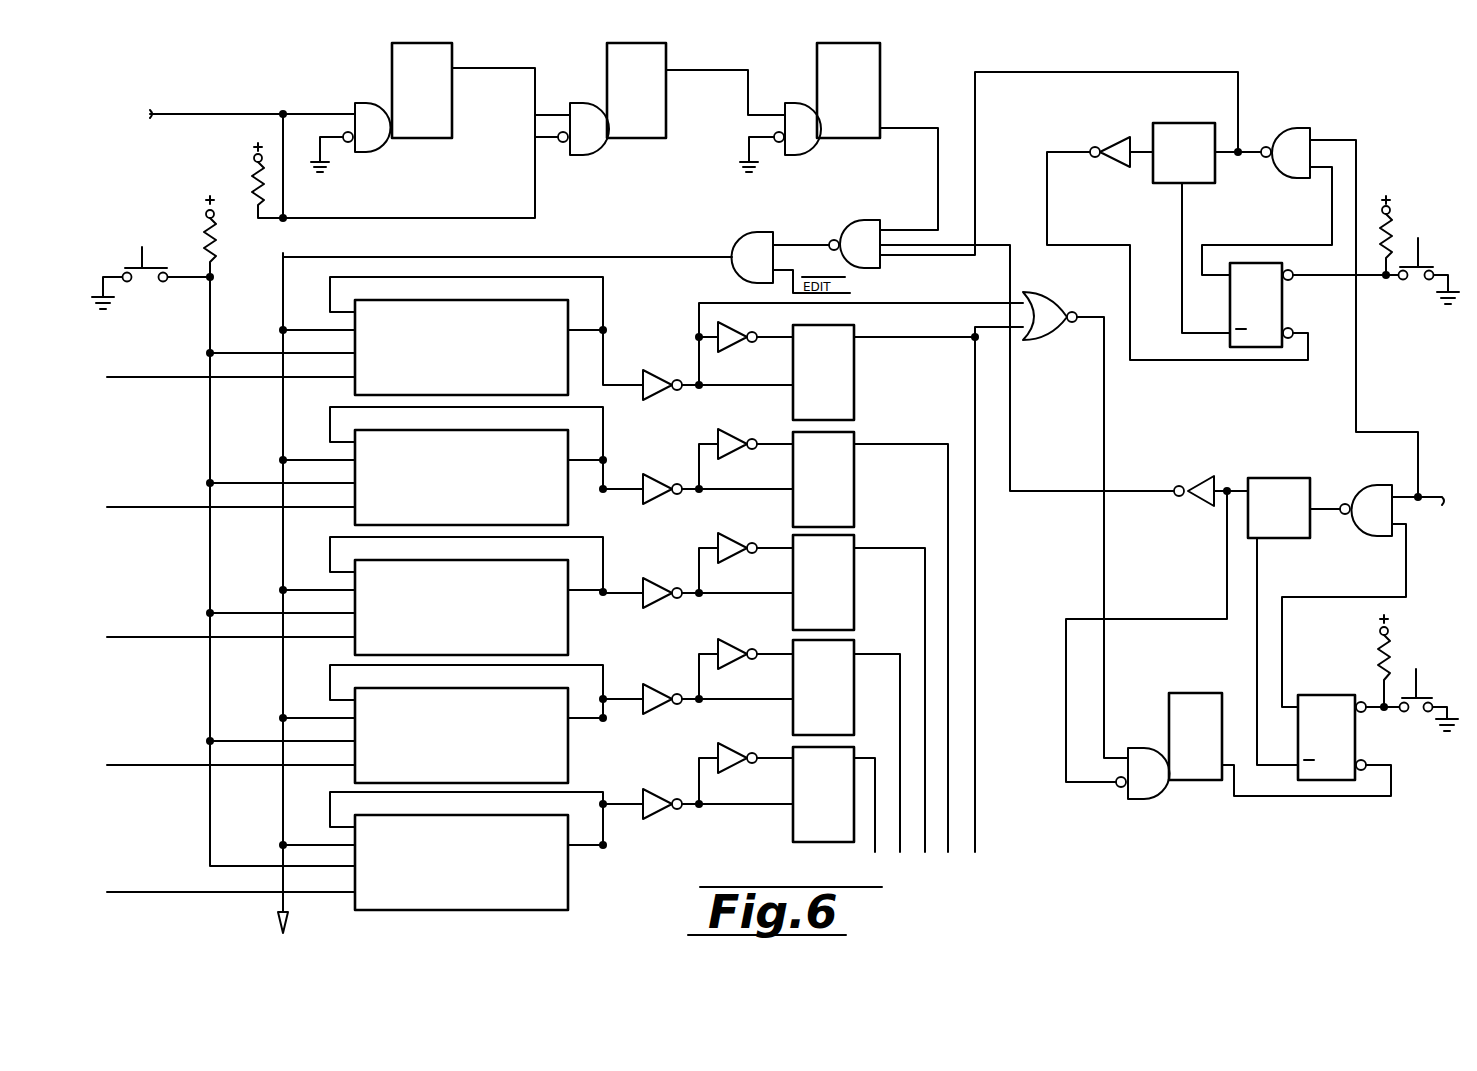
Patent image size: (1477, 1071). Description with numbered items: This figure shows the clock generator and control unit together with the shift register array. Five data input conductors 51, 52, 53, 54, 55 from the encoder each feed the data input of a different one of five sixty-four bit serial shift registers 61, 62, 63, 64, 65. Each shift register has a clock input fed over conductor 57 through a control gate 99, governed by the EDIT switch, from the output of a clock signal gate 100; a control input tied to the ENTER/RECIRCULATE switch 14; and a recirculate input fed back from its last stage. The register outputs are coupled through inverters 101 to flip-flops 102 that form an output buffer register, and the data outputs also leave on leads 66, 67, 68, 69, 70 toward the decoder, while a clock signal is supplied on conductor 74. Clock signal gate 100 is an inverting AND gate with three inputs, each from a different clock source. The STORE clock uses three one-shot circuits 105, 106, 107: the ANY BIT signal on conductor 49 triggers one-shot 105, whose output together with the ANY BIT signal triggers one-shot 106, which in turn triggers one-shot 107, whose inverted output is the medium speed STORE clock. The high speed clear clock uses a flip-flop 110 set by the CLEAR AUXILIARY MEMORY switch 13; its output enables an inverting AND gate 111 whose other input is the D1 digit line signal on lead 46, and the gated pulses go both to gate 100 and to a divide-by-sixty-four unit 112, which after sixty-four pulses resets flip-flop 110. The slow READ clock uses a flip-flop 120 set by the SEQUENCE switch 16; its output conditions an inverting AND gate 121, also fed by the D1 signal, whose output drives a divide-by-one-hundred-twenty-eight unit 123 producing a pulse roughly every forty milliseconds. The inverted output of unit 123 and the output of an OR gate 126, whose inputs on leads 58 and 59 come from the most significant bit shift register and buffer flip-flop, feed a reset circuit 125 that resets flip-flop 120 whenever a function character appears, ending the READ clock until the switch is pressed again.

The CLEAR AUXILIARY MEMORY switch 13 is at (1426, 265).
The ENTER/RECIRCULATE switch 14 is at (132, 265).
The SEQUENCE switch 16 is at (1430, 700).
The lead 46 is at (1436, 494).
The conductor 49 is at (195, 112).
The conductor 51 is at (140, 891).
The conductor 52 is at (140, 761).
The conductor 53 is at (140, 633).
The conductor 54 is at (145, 506).
The conductor 55 is at (160, 376).
The lead 57 is at (560, 256).
The lead 58 is at (918, 303).
The lead 59 is at (912, 337).
The shift register 61 is at (562, 830).
The shift register 62 is at (562, 703).
The shift register 63 is at (562, 575).
The shift register 64 is at (562, 445).
The shift register 65 is at (562, 315).
The lead 66 is at (978, 658).
The lead 67 is at (950, 695).
The lead 68 is at (925, 650).
The lead 69 is at (900, 760).
The lead 70 is at (875, 832).
The conductor 74 is at (283, 906).
The control gate 99 is at (741, 243).
The clock signal gate 100 is at (866, 230).
The inverter 101 is at (660, 372).
The flip-flop 102 is at (846, 392).
The one-shot circuit 105 is at (450, 52).
The one-shot circuit 106 is at (662, 52).
The one-shot circuit 107 is at (876, 60).
The flip-flop 110 is at (1275, 322).
The inverting AND gate 111 is at (1297, 128).
The divide-by-64 unit 112 is at (1180, 125).
The flip-flop 120 is at (1328, 695).
The inverting AND gate 121 is at (1376, 485).
The divide-by-128 unit 123 is at (1274, 476).
The reset circuit 125 is at (1196, 693).
The OR gate 126 is at (1042, 302).